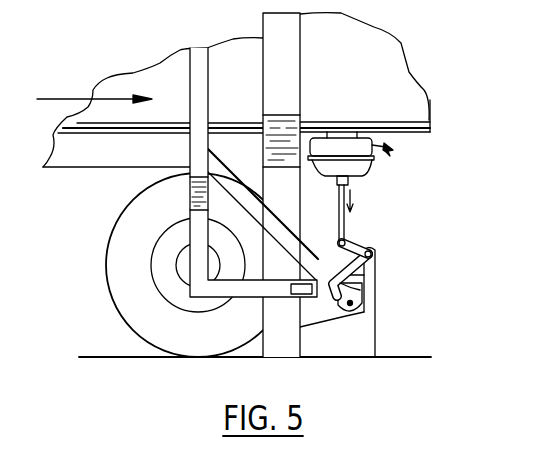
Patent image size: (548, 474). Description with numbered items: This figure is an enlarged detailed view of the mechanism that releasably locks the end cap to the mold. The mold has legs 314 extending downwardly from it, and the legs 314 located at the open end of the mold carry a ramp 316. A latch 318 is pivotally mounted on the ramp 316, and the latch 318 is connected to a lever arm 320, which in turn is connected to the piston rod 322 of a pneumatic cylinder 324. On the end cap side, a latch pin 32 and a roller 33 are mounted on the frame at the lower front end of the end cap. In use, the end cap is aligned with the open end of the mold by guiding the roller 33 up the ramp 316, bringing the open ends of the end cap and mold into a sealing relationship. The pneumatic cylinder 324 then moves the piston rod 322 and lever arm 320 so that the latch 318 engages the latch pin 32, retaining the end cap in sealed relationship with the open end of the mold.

The legs 314 is at (262, 170).
The ramp 316 is at (311, 344).
The latch 318 is at (366, 269).
The lever arm 320 is at (356, 238).
The piston rod 322 is at (336, 217).
The pneumatic cylinder 324 is at (360, 168).
The latch pin 32 is at (360, 290).
The roller 33 is at (351, 314).